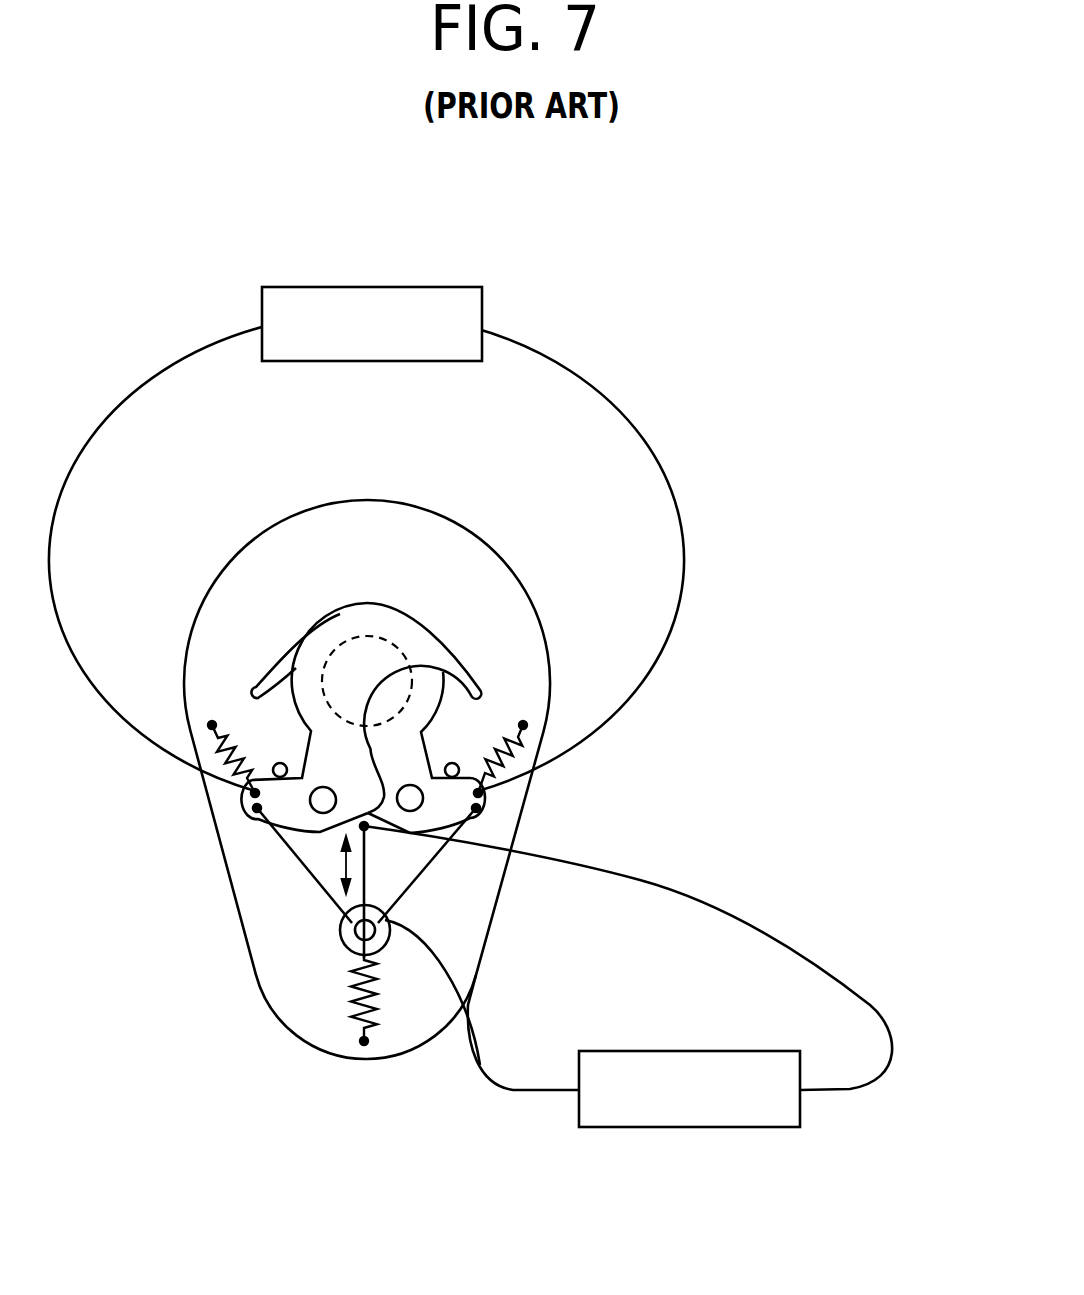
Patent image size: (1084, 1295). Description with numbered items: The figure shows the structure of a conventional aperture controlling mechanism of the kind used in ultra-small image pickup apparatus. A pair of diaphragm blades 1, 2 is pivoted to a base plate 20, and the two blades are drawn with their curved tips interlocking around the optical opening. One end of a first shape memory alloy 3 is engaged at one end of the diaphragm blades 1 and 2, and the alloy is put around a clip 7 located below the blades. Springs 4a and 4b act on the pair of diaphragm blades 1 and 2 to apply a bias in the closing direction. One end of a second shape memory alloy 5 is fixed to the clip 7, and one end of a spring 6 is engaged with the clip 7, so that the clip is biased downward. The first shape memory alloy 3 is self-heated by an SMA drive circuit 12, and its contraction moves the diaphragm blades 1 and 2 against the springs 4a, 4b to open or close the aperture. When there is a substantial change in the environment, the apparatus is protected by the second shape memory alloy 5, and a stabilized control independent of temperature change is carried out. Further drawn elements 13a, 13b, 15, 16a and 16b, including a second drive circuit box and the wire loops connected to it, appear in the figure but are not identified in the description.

The diaphragm blade 1 is at (413, 623).
The diaphragm blade 2 is at (283, 660).
The first shape memory alloy 3 is at (322, 895).
The spring 4a is at (218, 750).
The spring 4b is at (522, 740).
The second shape memory alloy 5 is at (367, 883).
The spring 6 is at (372, 1052).
The clip 7 is at (350, 947).
The SMA drive circuit 12 is at (455, 287).
The SMA wire 13a is at (185, 360).
The SMA wire 13b is at (543, 354).
The SMA drive circuit 15 is at (770, 1128).
The SMA wire 16a is at (882, 1085).
The SMA wire 16b is at (535, 1092).
The base plate 20 is at (480, 537).